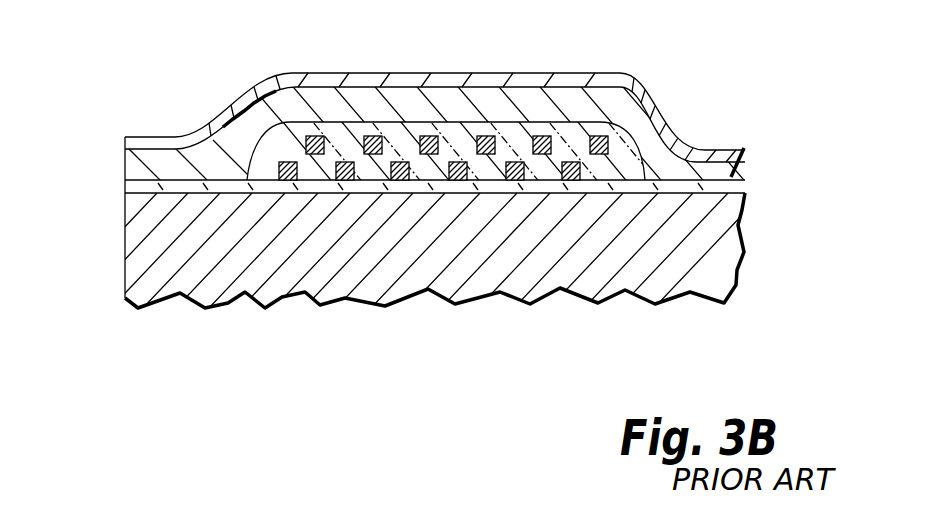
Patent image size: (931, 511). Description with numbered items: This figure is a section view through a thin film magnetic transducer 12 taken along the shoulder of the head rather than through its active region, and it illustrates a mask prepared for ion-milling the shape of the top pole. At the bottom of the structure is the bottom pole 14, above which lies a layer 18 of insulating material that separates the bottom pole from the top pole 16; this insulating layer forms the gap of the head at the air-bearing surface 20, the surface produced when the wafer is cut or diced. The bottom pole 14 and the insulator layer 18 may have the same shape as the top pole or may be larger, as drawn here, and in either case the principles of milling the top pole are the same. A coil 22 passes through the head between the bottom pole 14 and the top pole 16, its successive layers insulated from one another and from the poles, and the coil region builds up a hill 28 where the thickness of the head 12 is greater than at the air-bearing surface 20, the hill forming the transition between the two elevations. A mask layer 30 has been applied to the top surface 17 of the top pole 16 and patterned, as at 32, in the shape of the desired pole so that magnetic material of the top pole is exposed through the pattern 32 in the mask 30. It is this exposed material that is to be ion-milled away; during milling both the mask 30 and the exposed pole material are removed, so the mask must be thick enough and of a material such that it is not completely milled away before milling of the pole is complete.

The thin film magnetic transducer 12 is at (618, 85).
The bottom pole 14 is at (123, 268).
The top pole 16 is at (123, 165).
The top surface 17 is at (278, 78).
The layer of insulating material 18 is at (123, 187).
The air-bearing surface 20 is at (124, 232).
The coil 22 is at (604, 146).
The hill 28 is at (220, 118).
The mask layer 30 is at (388, 74).
The pattern 32 is at (158, 140).